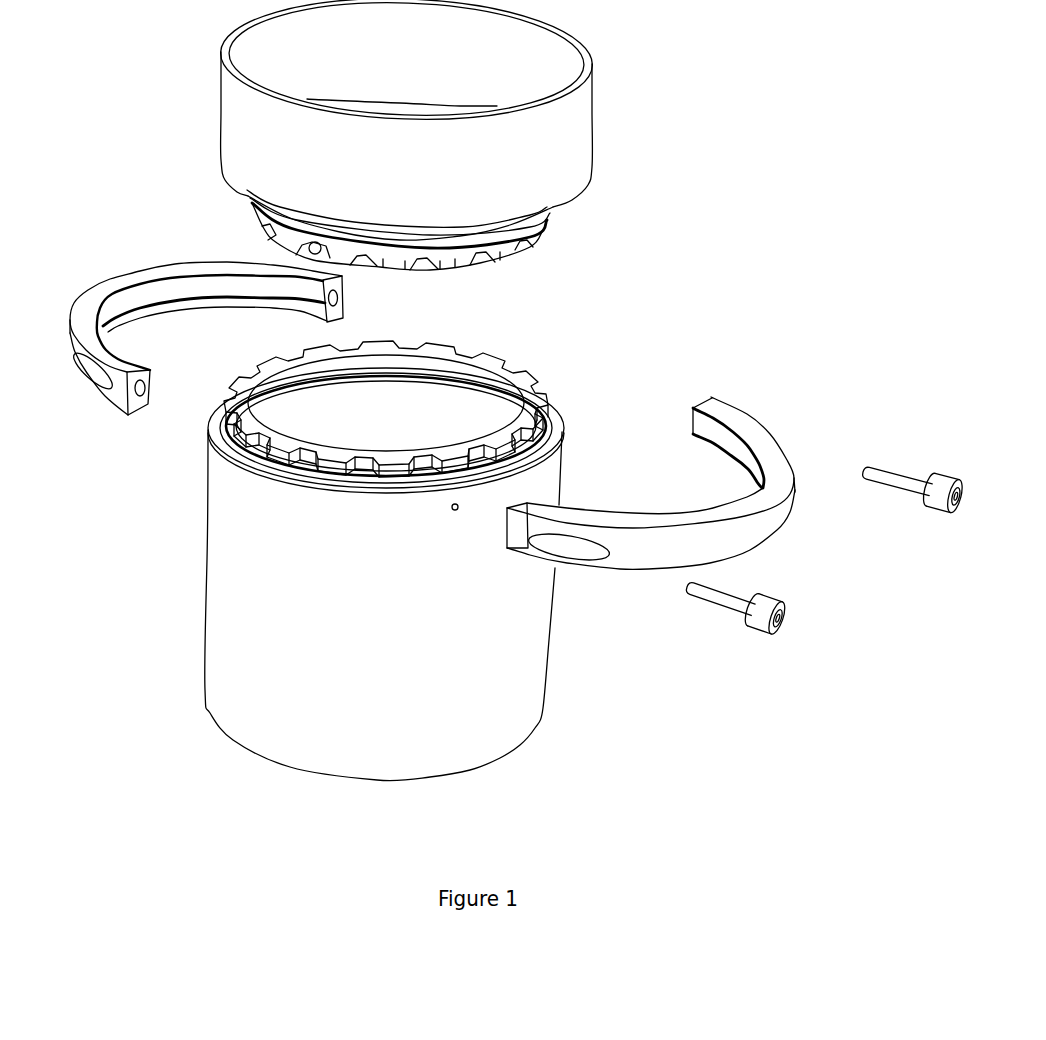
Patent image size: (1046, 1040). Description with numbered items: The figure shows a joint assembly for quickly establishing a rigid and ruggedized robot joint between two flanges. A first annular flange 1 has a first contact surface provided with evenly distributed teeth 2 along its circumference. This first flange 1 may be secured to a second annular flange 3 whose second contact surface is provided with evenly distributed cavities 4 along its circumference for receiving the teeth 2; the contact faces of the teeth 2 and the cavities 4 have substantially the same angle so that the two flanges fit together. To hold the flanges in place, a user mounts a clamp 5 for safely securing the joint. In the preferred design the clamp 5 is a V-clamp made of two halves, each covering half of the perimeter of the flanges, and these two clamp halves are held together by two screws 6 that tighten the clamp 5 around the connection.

The first annular flange 1 is at (406, 358).
The teeth 2 is at (474, 355).
The second annular flange 3 is at (348, 155).
The cavities 4 is at (481, 258).
The clamp 5 is at (90, 272).
The screws 6 is at (721, 620).